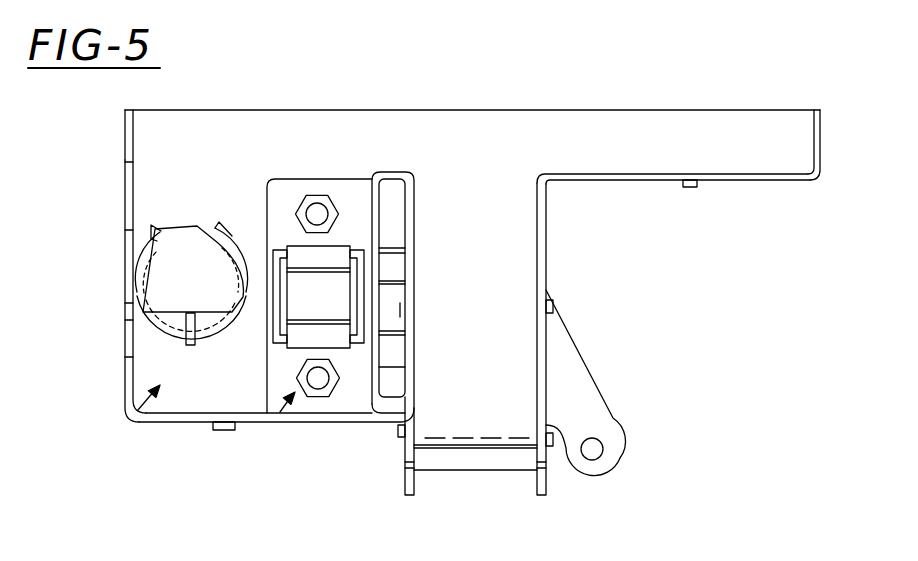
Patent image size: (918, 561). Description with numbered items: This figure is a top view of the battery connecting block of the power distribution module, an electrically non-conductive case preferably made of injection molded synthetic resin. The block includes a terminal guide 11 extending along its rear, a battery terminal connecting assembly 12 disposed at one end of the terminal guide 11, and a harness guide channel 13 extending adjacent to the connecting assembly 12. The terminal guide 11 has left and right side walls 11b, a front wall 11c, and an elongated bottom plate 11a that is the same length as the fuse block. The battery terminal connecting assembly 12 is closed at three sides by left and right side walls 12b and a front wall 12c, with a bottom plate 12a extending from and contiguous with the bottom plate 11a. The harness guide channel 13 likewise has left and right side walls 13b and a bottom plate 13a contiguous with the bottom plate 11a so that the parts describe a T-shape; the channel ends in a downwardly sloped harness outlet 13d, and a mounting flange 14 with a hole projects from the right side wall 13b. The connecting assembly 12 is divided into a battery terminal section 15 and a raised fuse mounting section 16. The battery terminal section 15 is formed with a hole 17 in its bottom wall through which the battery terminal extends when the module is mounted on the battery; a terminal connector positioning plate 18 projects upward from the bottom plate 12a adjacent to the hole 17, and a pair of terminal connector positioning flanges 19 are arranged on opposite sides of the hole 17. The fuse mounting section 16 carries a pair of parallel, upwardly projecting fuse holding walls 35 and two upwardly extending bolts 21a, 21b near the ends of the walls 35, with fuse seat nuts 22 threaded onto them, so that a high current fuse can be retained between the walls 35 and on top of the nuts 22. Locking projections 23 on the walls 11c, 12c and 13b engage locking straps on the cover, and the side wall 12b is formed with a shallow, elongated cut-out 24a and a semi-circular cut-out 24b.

The terminal guide 11 is at (667, 112).
The bottom plate 11a is at (572, 122).
The side walls 11b is at (125, 138).
The front wall 11c is at (756, 181).
The battery terminal connecting assembly 12 is at (112, 282).
The bottom plate 12a is at (143, 211).
The side walls 12b is at (128, 387).
The front wall 12c is at (182, 425).
The harness guide channel 13 is at (559, 229).
The bottom plate 13a is at (527, 270).
The side walls 13b is at (413, 245).
The harness outlet 13d is at (393, 172).
The mounting flange 14 is at (614, 457).
The battery terminal section 15 is at (138, 422).
The fuse mounting section 16 is at (280, 412).
The hole 17 is at (192, 290).
The terminal connector positioning plate 18 is at (197, 342).
The terminal connector positioning flanges 19 is at (189, 228).
The bolt 21a is at (310, 213).
The bolt 21b is at (318, 388).
The fuse seat nuts 22 is at (335, 208).
The locking projections 23 is at (226, 431).
The elongated cut-out 24a is at (125, 180).
The semi-circular cut-out 24b is at (128, 335).
The fuse holding walls 35 is at (285, 265).